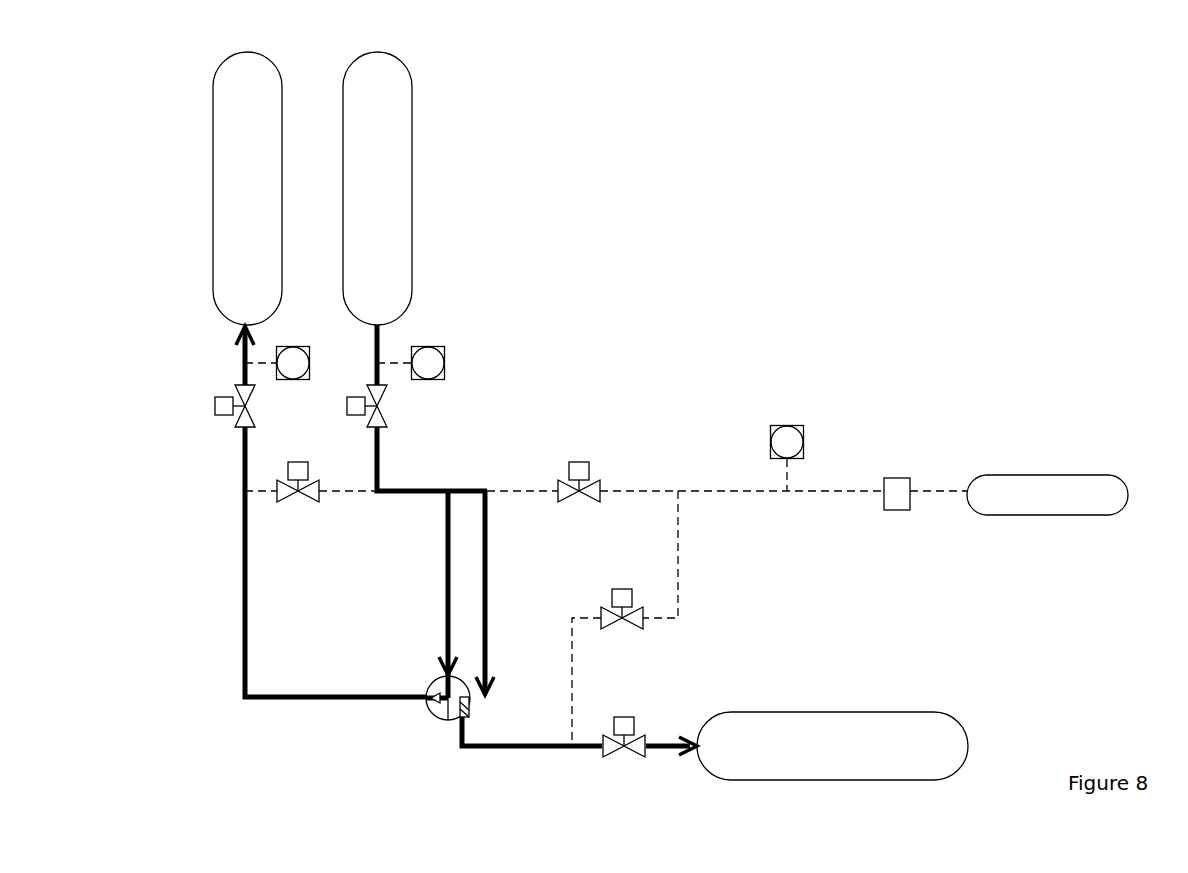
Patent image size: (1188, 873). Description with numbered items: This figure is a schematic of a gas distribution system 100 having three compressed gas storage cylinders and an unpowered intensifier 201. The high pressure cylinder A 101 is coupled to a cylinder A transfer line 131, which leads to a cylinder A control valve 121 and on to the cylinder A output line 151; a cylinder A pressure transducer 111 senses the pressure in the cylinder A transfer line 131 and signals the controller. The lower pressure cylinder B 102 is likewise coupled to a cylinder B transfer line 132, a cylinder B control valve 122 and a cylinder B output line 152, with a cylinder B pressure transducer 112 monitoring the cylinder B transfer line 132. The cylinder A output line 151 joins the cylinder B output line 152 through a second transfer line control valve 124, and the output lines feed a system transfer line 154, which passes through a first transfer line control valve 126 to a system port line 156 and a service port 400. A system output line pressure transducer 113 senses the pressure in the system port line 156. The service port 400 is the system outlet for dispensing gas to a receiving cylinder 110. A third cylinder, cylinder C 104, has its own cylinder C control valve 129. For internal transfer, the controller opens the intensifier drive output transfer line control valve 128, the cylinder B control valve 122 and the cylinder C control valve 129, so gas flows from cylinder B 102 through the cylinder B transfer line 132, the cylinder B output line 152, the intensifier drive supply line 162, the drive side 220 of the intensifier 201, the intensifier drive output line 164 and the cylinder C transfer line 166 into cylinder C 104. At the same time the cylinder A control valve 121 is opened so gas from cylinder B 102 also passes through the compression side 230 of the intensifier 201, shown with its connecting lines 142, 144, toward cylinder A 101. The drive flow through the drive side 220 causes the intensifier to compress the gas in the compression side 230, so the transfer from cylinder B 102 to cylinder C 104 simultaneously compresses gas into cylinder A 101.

The gas distribution system 100 is at (680, 120).
The cylinder A 101 is at (232, 62).
The cylinder B 102 is at (365, 62).
The cylinder C 104 is at (800, 755).
The receiving cylinder 110 is at (1050, 475).
The cylinder A pressure transducer 111 is at (300, 350).
The cylinder B pressure transducer 112 is at (446, 365).
The system output line pressure transducer 113 is at (785, 425).
The cylinder A control valve 121 is at (228, 393).
The cylinder B control valve 122 is at (392, 400).
The second transfer line control valve 124 is at (305, 502).
The first transfer line control valve 126 is at (595, 482).
The intensifier drive output transfer line control valve 128 is at (625, 632).
The cylinder C control valve 129 is at (637, 757).
The cylinder A transfer line 131 is at (238, 343).
The cylinder B transfer line 132 is at (380, 348).
The inlet conduit to pump 142 is at (447, 590).
The conduit from vessel A to pump 144 is at (243, 590).
The cylinder A output line 151 is at (258, 488).
The cylinder B output line 152 is at (412, 488).
The system transfer line 154 is at (518, 488).
The system port line 156 is at (693, 488).
The intensifier drive supply line 162 is at (490, 610).
The intensifier drive output line 164 is at (538, 748).
The cylinder C transfer line 166 is at (676, 752).
The unpowered intensifier 201 is at (440, 722).
The drive side 220 is at (470, 700).
The compression side 230 is at (433, 688).
The service port 400 is at (891, 510).